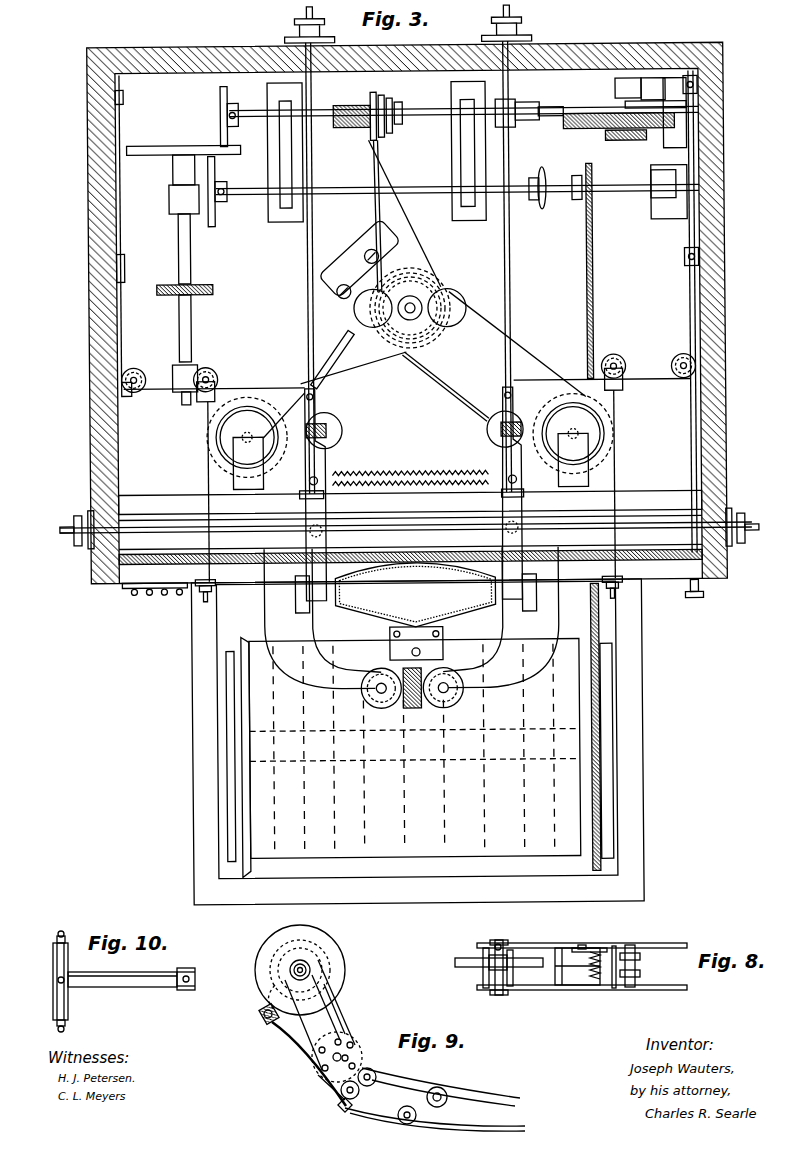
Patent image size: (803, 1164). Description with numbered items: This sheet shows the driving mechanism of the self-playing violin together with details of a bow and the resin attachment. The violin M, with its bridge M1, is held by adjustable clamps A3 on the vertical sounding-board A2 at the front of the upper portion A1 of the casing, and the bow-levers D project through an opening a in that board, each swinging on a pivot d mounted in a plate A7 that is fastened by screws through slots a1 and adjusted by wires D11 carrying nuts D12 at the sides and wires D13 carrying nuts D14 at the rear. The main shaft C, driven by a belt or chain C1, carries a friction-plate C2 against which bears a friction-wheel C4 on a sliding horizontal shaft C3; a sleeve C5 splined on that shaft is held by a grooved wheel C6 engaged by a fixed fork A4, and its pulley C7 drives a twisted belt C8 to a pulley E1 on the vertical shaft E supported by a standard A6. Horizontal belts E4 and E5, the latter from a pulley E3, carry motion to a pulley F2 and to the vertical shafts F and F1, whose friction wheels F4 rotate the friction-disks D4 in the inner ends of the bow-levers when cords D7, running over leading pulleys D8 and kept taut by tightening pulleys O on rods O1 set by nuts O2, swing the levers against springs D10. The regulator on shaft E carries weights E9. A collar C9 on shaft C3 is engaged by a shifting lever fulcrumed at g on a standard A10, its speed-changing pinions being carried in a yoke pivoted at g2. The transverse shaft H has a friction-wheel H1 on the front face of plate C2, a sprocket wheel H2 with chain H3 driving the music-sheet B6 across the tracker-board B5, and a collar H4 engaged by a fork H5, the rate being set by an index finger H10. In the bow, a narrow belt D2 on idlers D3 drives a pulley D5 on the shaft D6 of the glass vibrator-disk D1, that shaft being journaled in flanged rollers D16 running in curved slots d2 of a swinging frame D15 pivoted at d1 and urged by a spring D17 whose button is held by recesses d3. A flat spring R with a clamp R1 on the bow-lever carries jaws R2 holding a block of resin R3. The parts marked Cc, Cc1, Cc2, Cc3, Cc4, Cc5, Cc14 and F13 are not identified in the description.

In FIG. 3, the upper portion of the casing A1 is at (90, 322).
In FIG. 3, the sounding-board A2 is at (118, 557).
In FIG. 3, the adjustable clamps A3 is at (410, 504).
In FIG. 3, the fixed fork or yoke A4 is at (402, 124).
In FIG. 3, the vertical bracket or standard A6 is at (352, 272).
In FIG. 3, the plates A7 is at (322, 462).
In FIG. 3, the standard A10 is at (526, 128).
In FIG. 3, the tracker-board B5 is at (214, 749).
In FIG. 3, the music-sheet B6 is at (415, 749).
In FIG. 3, the main shaft C is at (191, 255).
In FIG. 3, the belt or chain C1 is at (213, 290).
In FIG. 3, the friction-plate C2 is at (165, 144).
In FIG. 3, the horizontal shaft C3 is at (253, 112).
In FIG. 3, the friction-wheel C4 is at (229, 110).
In FIG. 3, the sleeve C5 is at (348, 105).
In FIG. 3, the wheel C6 is at (401, 102).
In FIG. 3, the pulley C7 is at (372, 135).
In FIG. 3, the twisted belt C8 is at (374, 212).
In FIG. 3, the collar C9 is at (636, 118).
In FIG. 3, the rack Cc is at (566, 112).
In FIG. 3, the collar Cc1 is at (504, 128).
In FIG. 3, the block Cc2 is at (600, 112).
In FIG. 3, the pinion Cc3 is at (597, 155).
In FIG. 3, the standard Cc4 is at (625, 110).
In FIG. 3, the pinion Cc5 is at (576, 130).
In FIG. 3, the gear Cc14 is at (594, 138).
In FIG. 3, the bow-lever D is at (309, 622).
In FIG. 9, the bow-lever D is at (441, 1087).
In FIG. 8, the bow-lever D is at (655, 943).
In FIG. 3, the vibrator-disk D1 is at (365, 700).
In FIG. 9, the vibrator-disk D1 is at (285, 968).
In FIG. 8, the vibrator-disk D1 is at (455, 963).
In FIG. 9, the narrow belt D2 is at (515, 1103).
In FIG. 9, the idlers D3 is at (440, 1085).
In FIG. 8, the idlers D3 is at (640, 965).
In FIG. 3, the friction-disk D4 is at (332, 418).
In FIG. 8, the pulley D5 is at (483, 975).
In FIG. 8, the shaft of the vibrator-disk D6 is at (500, 941).
In FIG. 3, the cords D7 is at (170, 388).
In FIG. 3, the idle leading pulleys D8 is at (122, 92).
In FIG. 3, the springs D10 is at (420, 471).
In FIG. 3, the wires D11 is at (180, 534).
In FIG. 8, the wires D11 is at (616, 946).
In FIG. 3, the nuts D12 is at (72, 522).
In FIG. 3, the wires D13 is at (308, 262).
In FIG. 3, the nuts D14 is at (300, 28).
In FIG. 9, the swinging frame D15 is at (340, 1012).
In FIG. 8, the swinging frame D15 is at (560, 986).
In FIG. 9, the flanged anti-friction rollers D16 is at (310, 964).
In FIG. 8, the flanged anti-friction rollers D16 is at (492, 945).
In FIG. 9, the spring D17 is at (320, 1080).
In FIG. 8, the spring D17 is at (595, 986).
In FIG. 3, the vertical shaft E is at (430, 290).
In FIG. 3, the pulley E1 is at (425, 278).
In FIG. 3, the pulley E3 is at (432, 338).
In FIG. 3, the horizontal belt E4 is at (518, 345).
In FIG. 3, the horizontal belt E5 is at (335, 354).
In FIG. 3, the balls or weights E9 is at (458, 304).
In FIG. 3, the vertical shaft F is at (573, 440).
In FIG. 3, the vertical shaft F1 is at (247, 443).
In FIG. 3, the pulley F2 is at (605, 412).
In FIG. 3, the friction wheels F4 is at (218, 438).
In FIG. 3, the link F13 is at (240, 422).
In FIG. 3, the shaft H is at (248, 195).
In FIG. 3, the friction-wheel H1 is at (216, 170).
In FIG. 3, the sprocket wheel H2 is at (584, 200).
In FIG. 3, the sprocket chain H3 is at (597, 612).
In FIG. 3, the collar H4 is at (540, 200).
In FIG. 3, the fork H5 is at (594, 290).
In FIG. 3, the index finger H10 is at (701, 597).
In FIG. 3, the violin M is at (413, 600).
In FIG. 3, the bridge M1 is at (425, 630).
In FIG. 3, the tightening pulleys O is at (208, 366).
In FIG. 3, the rods O1 is at (205, 463).
In FIG. 3, the nuts O2 is at (214, 585).
In FIG. 10, the flat spring R is at (112, 987).
In FIG. 9, the flat spring R is at (288, 1045).
In FIG. 10, the clamp R1 is at (54, 972).
In FIG. 9, the clamp R1 is at (348, 1110).
In FIG. 10, the jaws R2 is at (185, 991).
In FIG. 9, the jaws R2 is at (260, 1012).
In FIG. 9, the block of resin R3 is at (262, 1018).
In FIG. 3, the opening a is at (390, 556).
In FIG. 3, the slots a1 is at (323, 494).
In FIG. 3, the pivot or fulcrum d is at (322, 530).
In FIG. 9, the pivot d1 is at (352, 1050).
In FIG. 8, the pivot d1 is at (584, 945).
In FIG. 9, the curved slots d2 is at (258, 986).
In FIG. 9, the depressions or recesses d3 is at (362, 1058).
In FIG. 3, the fulcrum g is at (510, 104).
In FIG. 3, the pivot g2 is at (628, 142).